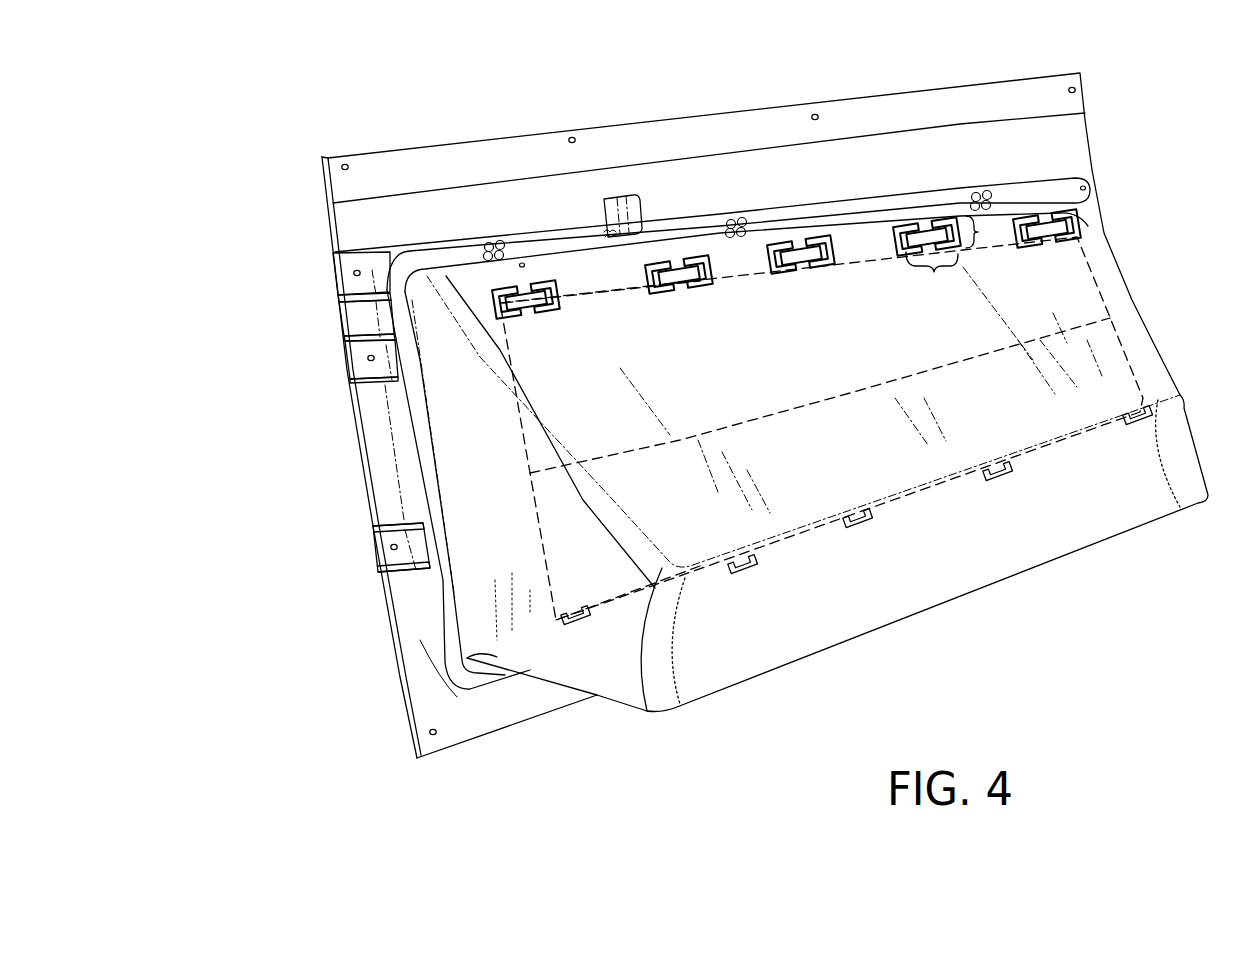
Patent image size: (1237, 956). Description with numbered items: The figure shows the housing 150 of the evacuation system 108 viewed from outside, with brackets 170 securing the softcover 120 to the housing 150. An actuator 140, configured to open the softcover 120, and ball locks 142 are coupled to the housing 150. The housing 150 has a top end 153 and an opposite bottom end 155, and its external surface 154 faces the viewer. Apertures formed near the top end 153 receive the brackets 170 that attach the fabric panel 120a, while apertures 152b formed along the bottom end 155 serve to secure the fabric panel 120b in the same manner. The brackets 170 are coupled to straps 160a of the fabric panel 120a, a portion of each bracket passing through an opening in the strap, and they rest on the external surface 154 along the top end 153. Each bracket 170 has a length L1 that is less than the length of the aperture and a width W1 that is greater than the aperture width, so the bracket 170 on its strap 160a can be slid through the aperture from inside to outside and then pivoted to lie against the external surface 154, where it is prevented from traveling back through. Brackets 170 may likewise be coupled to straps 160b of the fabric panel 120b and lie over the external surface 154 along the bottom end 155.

The evacuation system 108 is at (263, 120).
The softcover 120 is at (530, 473).
The fabric panel 120a is at (632, 304).
The fabric panel 120b is at (601, 597).
The actuator 140 is at (628, 211).
The ball locks 142 is at (968, 203).
The housing 150 is at (459, 452).
The apertures 152b is at (740, 578).
The top end 153 is at (1080, 203).
The external surface 154 is at (927, 354).
The bottom end 155 is at (535, 672).
The straps 160a is at (527, 300).
The straps 160b is at (852, 500).
The brackets 170 is at (548, 302).
The width of bracket W1 is at (988, 232).
The length of bracket L1 is at (932, 279).